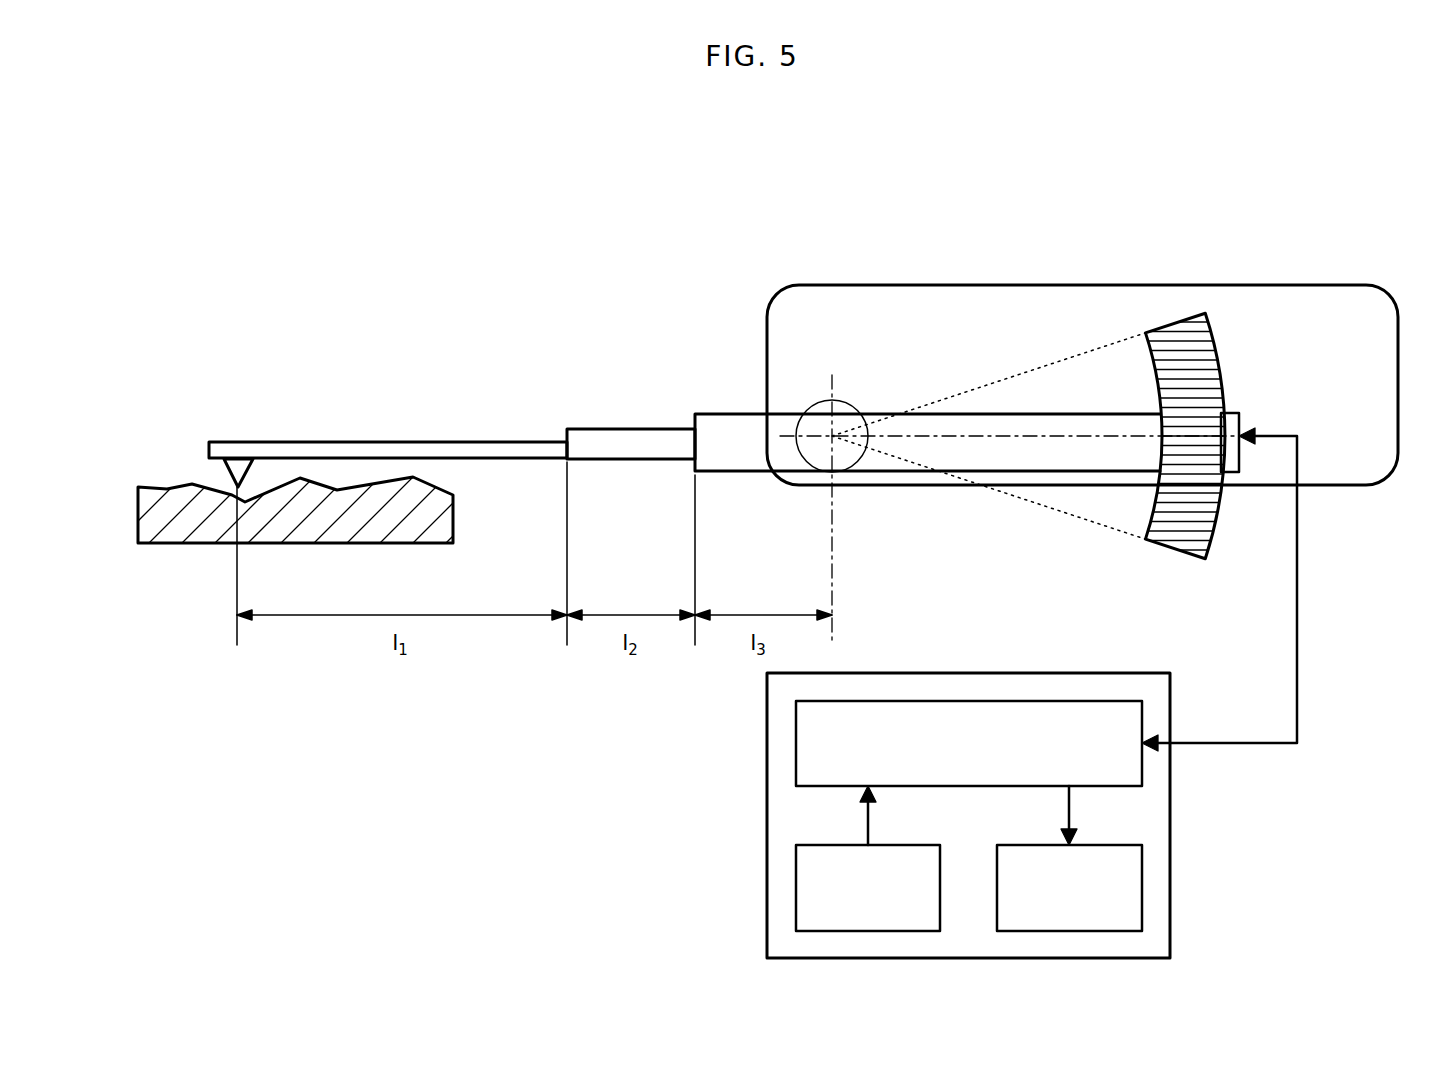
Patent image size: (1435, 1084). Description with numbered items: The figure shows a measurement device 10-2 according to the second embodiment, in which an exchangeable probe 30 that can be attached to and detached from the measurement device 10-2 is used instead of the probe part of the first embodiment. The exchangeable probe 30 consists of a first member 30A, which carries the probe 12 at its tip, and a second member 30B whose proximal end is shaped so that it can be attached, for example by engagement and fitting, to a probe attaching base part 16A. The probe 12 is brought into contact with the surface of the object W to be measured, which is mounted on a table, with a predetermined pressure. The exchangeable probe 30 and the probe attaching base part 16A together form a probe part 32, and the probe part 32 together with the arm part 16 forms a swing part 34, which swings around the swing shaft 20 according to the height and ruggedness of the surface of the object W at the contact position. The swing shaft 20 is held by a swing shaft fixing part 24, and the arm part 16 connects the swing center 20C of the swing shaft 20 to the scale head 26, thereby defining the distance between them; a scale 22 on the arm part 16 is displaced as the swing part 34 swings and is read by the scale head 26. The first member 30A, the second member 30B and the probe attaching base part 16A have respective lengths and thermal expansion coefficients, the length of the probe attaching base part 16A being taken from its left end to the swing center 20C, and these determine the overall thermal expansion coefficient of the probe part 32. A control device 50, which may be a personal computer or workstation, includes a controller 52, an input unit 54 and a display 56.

The measurement device 10-2 is at (343, 202).
The probe 12 is at (209, 470).
The arm part 16 is at (968, 414).
The probe attaching base part 16A is at (740, 412).
The swing shaft 20 is at (830, 420).
The swing center 20C is at (829, 440).
The scale 22 is at (1183, 325).
The swing shaft fixing part 24 is at (1072, 284).
The scale head 26 is at (1266, 431).
The exchangeable probe 30 is at (655, 370).
The first member 30A is at (350, 438).
The second member 30B is at (612, 428).
The probe part 32 is at (742, 284).
The swing part 34 is at (495, 198).
The control device 50 is at (973, 672).
The controller 52 is at (796, 748).
The input unit 54 is at (796, 892).
The display 56 is at (1142, 887).
The object to be measured W is at (455, 510).